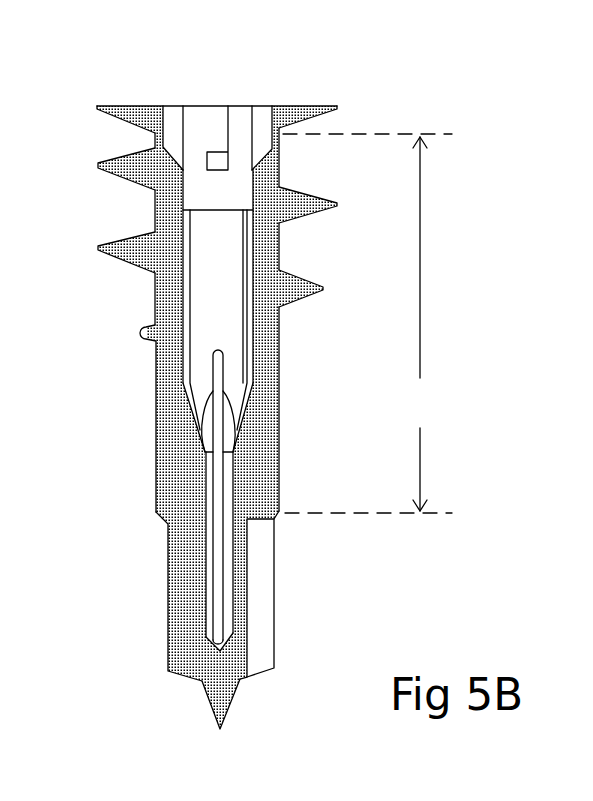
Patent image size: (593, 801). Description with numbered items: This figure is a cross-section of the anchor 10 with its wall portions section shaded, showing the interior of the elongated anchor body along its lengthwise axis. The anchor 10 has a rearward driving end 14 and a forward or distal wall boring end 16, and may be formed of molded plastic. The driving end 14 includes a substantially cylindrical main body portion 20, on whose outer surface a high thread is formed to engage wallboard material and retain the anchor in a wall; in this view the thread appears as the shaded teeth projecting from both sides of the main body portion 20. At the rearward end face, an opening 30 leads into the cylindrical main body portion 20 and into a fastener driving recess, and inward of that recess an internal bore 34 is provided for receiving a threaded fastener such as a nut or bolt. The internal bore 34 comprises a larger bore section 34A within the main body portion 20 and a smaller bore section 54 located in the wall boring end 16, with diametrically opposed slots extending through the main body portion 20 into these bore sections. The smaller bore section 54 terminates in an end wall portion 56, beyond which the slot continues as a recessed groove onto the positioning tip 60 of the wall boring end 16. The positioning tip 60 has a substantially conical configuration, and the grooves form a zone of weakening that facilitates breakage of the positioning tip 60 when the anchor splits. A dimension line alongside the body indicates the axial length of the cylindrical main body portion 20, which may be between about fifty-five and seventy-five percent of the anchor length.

The anchor 10 is at (235, 380).
The driving end 14 is at (96, 193).
The wall boring end 16 is at (196, 539).
The main body portion 20 is at (191, 309).
The opening 30 is at (219, 104).
The internal bore 34 is at (248, 257).
The larger bore section 34A is at (237, 330).
The smaller bore section 54 is at (276, 500).
The end wall portion 56 is at (223, 633).
The positioning tip 60 is at (227, 693).